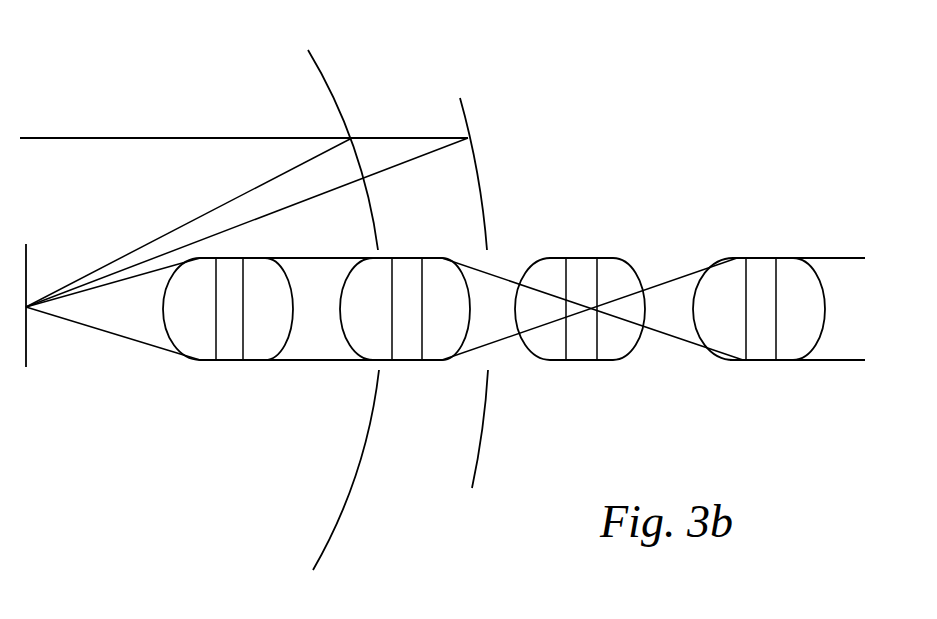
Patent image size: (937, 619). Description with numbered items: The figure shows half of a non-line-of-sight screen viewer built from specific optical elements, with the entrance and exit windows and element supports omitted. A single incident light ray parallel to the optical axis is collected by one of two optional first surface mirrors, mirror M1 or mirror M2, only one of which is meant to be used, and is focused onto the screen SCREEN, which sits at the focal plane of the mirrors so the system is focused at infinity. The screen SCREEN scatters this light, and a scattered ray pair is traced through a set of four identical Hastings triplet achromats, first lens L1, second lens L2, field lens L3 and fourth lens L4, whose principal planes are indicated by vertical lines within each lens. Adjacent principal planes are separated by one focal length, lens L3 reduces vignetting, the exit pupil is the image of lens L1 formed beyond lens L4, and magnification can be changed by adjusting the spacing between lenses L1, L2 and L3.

The screen SCREEN is at (69, 331).
The mirror M1 is at (334, 313).
The mirror M2 is at (462, 298).
The first lens L1 is at (228, 327).
The second lens L2 is at (405, 327).
The field lens L3 is at (580, 327).
The fourth lens L4 is at (759, 327).